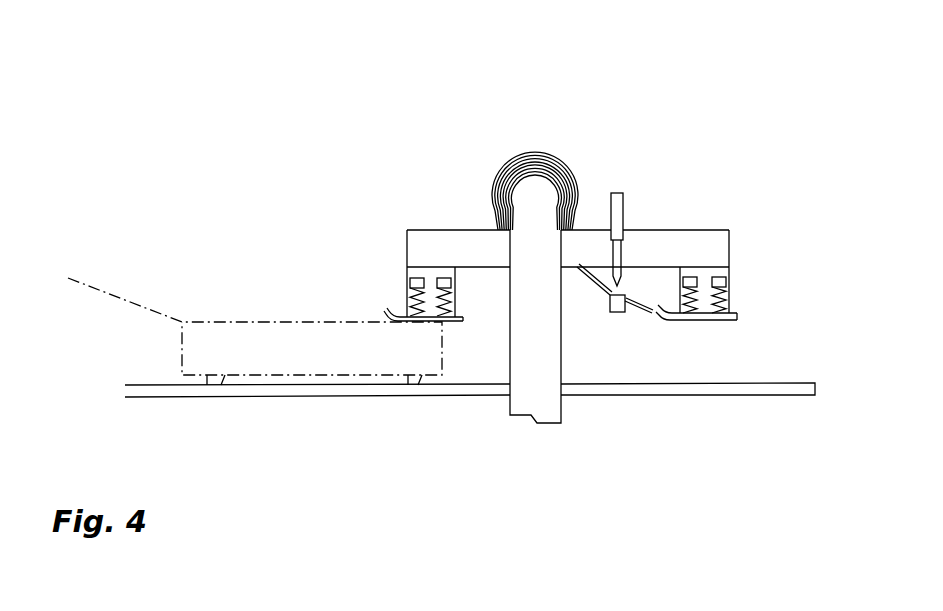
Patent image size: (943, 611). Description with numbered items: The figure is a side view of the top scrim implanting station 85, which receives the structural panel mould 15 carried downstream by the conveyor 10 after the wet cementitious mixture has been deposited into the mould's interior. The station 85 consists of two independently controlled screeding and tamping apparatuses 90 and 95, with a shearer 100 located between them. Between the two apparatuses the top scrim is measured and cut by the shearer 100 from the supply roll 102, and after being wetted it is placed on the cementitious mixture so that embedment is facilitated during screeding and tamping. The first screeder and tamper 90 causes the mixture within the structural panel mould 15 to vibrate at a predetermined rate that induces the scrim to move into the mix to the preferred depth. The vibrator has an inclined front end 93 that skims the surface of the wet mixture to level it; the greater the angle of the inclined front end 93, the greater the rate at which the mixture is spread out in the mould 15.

The top scrim implanting station 85 is at (222, 153).
The supply roll 102 is at (560, 170).
The first screeding and tamping apparatus 90 is at (431, 280).
The inclined front end 93 is at (388, 308).
The second screeding and tamping apparatus 95 is at (720, 282).
The shearer 100 is at (619, 210).
The structural panel mould 15 is at (240, 318).
The conveyor 10 is at (140, 388).